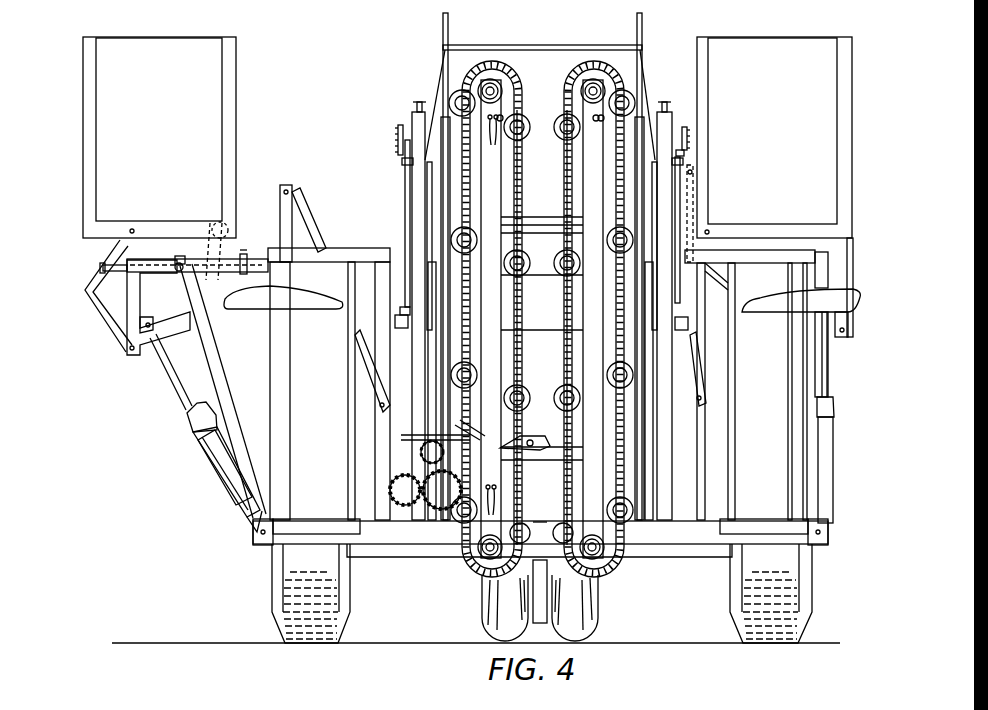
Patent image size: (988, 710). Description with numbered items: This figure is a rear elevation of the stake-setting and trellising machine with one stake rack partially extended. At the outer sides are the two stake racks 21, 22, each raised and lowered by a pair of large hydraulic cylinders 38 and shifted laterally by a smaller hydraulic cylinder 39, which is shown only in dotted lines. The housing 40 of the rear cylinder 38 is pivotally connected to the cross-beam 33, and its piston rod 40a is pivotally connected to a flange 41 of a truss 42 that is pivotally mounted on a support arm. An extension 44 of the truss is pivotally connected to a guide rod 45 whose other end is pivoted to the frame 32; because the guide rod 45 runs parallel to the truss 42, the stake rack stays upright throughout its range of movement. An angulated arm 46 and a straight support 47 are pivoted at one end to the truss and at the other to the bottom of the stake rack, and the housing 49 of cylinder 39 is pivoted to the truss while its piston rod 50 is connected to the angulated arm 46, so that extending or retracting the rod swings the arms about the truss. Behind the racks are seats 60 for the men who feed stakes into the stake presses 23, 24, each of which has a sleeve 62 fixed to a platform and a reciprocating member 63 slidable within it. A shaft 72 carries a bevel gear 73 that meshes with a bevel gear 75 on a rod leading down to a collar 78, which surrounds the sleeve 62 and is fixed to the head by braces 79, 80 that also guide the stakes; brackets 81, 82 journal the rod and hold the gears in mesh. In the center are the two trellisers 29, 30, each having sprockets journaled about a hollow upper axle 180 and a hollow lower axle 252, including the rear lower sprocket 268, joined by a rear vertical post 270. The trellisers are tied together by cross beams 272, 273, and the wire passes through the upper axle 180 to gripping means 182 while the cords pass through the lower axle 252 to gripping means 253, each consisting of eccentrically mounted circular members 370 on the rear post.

The stake rack 21 is at (778, 145).
The stake rack 22 is at (153, 128).
The stake press 23 is at (666, 98).
The stake press 24 is at (543, 304).
The trelliser 29 is at (598, 58).
The trelliser 30 is at (494, 58).
The frame 32 is at (290, 418).
The cross-beam 33 is at (707, 547).
The hydraulic cylinder 38 is at (182, 452).
The hydraulic cylinder 39 is at (232, 250).
The housing 40 is at (226, 483).
The piston rod 40a is at (172, 393).
The flange 41 is at (152, 325).
The truss 42 is at (135, 292).
The extension 44 is at (280, 208).
The guide rod 45 is at (310, 220).
The angulated arm 46 is at (110, 322).
The straight support 47 is at (212, 238).
The housing 49 is at (247, 254).
The piston rod 50 is at (103, 267).
The seat 60 is at (257, 305).
The sleeve 62 is at (418, 426).
The reciprocating member 63 is at (425, 184).
The shaft 72 is at (405, 200).
The bevel gear 73 is at (396, 135).
The bevel gear 75 is at (684, 155).
The collar 78 is at (403, 329).
The brace 79 is at (429, 214).
The brace 80 is at (412, 230).
The bracket 81 is at (402, 162).
The bracket 82 is at (400, 305).
The hollow upper axle 180 is at (588, 84).
The gripping means 182 is at (593, 106).
The hollow lower axle 252 is at (484, 555).
The gripping means 253 is at (578, 510).
The rear lower sprocket 268 is at (480, 580).
The rear vertical post 270 is at (593, 162).
The cross beam 272 is at (541, 497).
The cross beam 273 is at (536, 225).
The eccentrically mounted circular member 370 is at (480, 315).